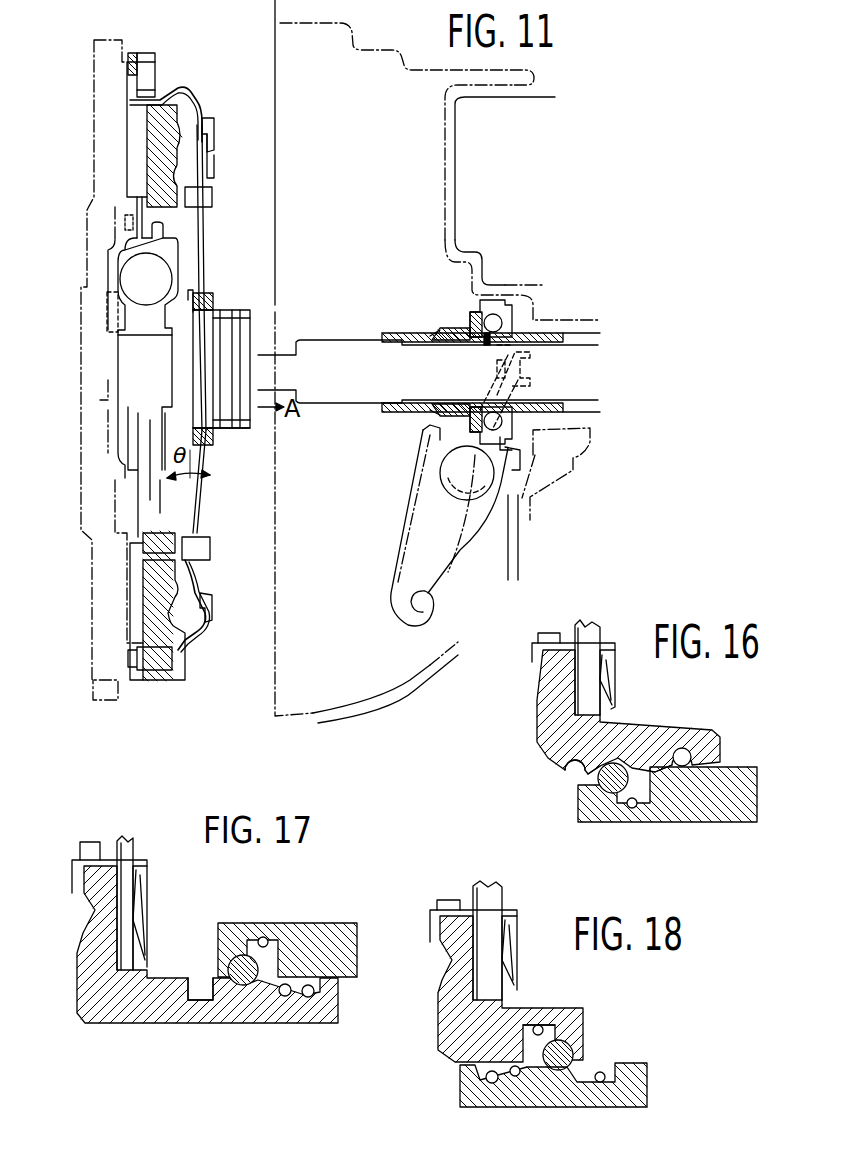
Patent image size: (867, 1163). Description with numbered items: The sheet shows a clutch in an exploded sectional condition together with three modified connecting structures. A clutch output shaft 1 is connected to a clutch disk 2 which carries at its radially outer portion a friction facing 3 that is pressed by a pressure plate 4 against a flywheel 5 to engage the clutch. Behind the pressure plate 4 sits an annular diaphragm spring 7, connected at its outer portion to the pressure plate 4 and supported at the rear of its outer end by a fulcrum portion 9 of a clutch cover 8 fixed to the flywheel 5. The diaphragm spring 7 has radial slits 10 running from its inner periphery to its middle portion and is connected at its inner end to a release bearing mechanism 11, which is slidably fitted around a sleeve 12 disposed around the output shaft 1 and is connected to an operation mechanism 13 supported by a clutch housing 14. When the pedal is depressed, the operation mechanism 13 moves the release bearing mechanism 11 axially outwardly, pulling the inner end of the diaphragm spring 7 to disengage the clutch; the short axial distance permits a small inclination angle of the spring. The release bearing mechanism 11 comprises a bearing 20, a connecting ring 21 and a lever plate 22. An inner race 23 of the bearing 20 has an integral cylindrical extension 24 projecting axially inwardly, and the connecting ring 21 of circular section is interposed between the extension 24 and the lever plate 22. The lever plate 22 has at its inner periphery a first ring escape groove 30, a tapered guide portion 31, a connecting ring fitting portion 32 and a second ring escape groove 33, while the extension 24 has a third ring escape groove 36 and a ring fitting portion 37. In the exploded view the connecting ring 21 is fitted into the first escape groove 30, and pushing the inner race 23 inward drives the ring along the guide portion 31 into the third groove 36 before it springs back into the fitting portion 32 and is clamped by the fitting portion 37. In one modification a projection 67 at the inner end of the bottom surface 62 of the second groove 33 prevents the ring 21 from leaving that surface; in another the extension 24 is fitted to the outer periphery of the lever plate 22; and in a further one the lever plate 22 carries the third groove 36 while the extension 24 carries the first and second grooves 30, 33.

In FIG. 11, the clutch output shaft 1 is at (333, 398).
In FIG. 11, the clutch disk 2 is at (115, 478).
In FIG. 11, the friction facing 3 is at (127, 167).
In FIG. 11, the pressure plate 4 is at (158, 104).
In FIG. 11, the flywheel 5 is at (103, 116).
In FIG. 11, the diaphragm spring 7 is at (210, 220).
In FIG. 16, the diaphragm spring 7 is at (583, 634).
In FIG. 17, the diaphragm spring 7 is at (133, 846).
In FIG. 18, the diaphragm spring 7 is at (498, 902).
In FIG. 11, the clutch cover 8 is at (190, 114).
In FIG. 11, the fulcrum portion 9 is at (208, 134).
In FIG. 11, the radial slits 10 is at (205, 250).
In FIG. 11, the release bearing mechanism 11 is at (369, 279).
In FIG. 11, the sleeve 12 is at (390, 344).
In FIG. 11, the operation mechanism 13 is at (544, 337).
In FIG. 11, the clutch housing 14 is at (445, 197).
In FIG. 11, the bearing 20 is at (476, 296).
In FIG. 11, the connecting ring 21 is at (240, 322).
In FIG. 16, the connecting ring 21 is at (600, 792).
In FIG. 17, the connecting ring 21 is at (240, 988).
In FIG. 18, the connecting ring 21 is at (575, 1055).
In FIG. 11, the lever plate 22 is at (216, 306).
In FIG. 16, the lever plate 22 is at (530, 735).
In FIG. 17, the lever plate 22 is at (137, 1035).
In FIG. 18, the lever plate 22 is at (430, 1042).
In FIG. 11, the inner race 23 is at (485, 347).
In FIG. 11, the cylindrical extension 24 is at (428, 330).
In FIG. 16, the cylindrical extension 24 is at (676, 830).
In FIG. 17, the cylindrical extension 24 is at (287, 914).
In FIG. 18, the cylindrical extension 24 is at (627, 1115).
In FIG. 11, the first ring escape groove 30 is at (234, 430).
In FIG. 16, the first ring escape groove 30 is at (683, 746).
In FIG. 17, the first ring escape groove 30 is at (308, 998).
In FIG. 18, the first ring escape groove 30 is at (492, 1084).
In FIG. 16, the guide portion 31 is at (667, 752).
In FIG. 17, the guide portion 31 is at (285, 997).
In FIG. 18, the guide portion 31 is at (516, 1077).
In FIG. 16, the connecting ring fitting portion 32 is at (618, 758).
In FIG. 17, the connecting ring fitting portion 32 is at (250, 990).
In FIG. 18, the connecting ring fitting portion 32 is at (560, 1072).
In FIG. 16, the second ring escape groove 33 is at (578, 772).
In FIG. 17, the second ring escape groove 33 is at (200, 990).
In FIG. 18, the second ring escape groove 33 is at (600, 1083).
In FIG. 16, the third ring escape groove 36 is at (634, 808).
In FIG. 17, the third ring escape groove 36 is at (263, 938).
In FIG. 18, the third ring escape groove 36 is at (538, 1025).
In FIG. 16, the ring fitting portion 37 is at (608, 795).
In FIG. 17, the ring fitting portion 37 is at (238, 957).
In FIG. 18, the ring fitting portion 37 is at (560, 1040).
In FIG. 16, the bottom surface 62 is at (565, 760).
In FIG. 16, the projection 67 is at (555, 752).